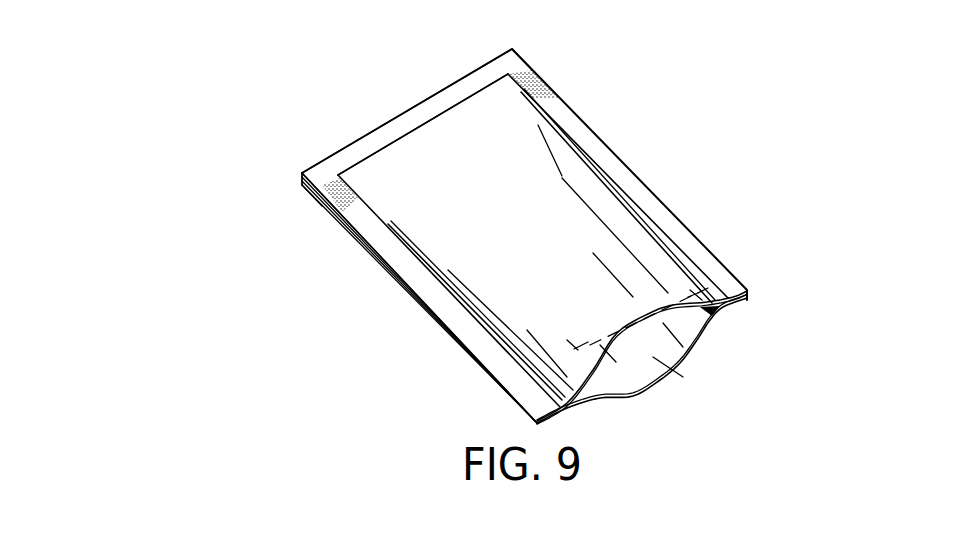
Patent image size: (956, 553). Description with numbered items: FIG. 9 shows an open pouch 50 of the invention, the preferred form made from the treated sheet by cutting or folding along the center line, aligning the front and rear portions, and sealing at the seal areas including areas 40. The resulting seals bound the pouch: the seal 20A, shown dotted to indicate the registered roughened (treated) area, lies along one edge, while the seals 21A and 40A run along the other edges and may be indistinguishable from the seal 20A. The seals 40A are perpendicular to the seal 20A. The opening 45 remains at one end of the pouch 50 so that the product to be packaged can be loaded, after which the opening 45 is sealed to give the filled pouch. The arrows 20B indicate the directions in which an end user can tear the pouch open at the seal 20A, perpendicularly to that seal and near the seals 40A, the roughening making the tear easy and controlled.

The seal 20A is at (545, 90).
The arrows 20B is at (539, 70).
The seal 21A is at (600, 148).
The areas 40 is at (713, 321).
The seals 40A is at (408, 120).
The opening 45 is at (675, 369).
The open pouch 50 is at (456, 342).